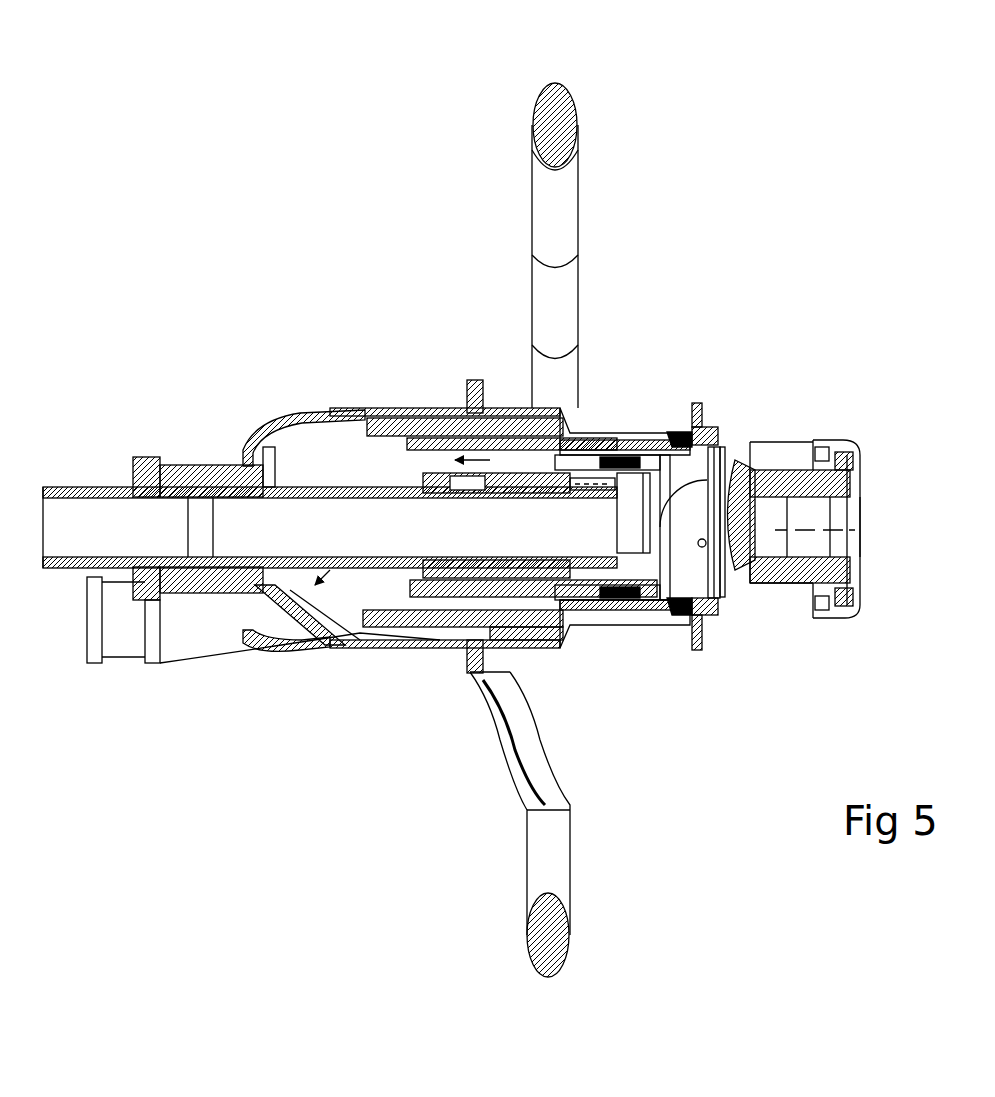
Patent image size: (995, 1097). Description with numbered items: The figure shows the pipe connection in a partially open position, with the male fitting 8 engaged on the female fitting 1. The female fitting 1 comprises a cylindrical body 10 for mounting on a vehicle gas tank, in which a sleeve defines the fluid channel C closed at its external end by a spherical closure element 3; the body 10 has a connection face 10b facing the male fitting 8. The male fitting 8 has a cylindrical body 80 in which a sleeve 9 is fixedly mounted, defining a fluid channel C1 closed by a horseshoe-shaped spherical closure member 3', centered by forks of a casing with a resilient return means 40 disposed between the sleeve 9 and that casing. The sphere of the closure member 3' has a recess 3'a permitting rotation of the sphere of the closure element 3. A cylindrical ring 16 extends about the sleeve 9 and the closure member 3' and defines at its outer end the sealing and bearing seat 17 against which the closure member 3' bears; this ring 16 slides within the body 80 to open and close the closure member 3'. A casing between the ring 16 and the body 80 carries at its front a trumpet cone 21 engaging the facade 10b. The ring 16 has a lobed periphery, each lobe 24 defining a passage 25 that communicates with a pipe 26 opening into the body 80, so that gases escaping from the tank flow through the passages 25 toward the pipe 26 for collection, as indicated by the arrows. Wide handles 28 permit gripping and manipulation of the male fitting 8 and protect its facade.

The female fitting 1 is at (818, 415).
The spherical closure element 3 is at (805, 555).
The spherical closure member 3' is at (721, 477).
The recess 3'a is at (905, 526).
The male fitting 8 is at (405, 365).
The sleeve 9 is at (250, 470).
The cylindrical body 10 is at (838, 440).
The connection face 10b is at (707, 445).
The cylindrical ring 16 is at (680, 600).
The sealing and bearing seat 17 is at (745, 580).
The trumpet cone 21 is at (680, 432).
The lobe 24 is at (608, 600).
The passage 25 is at (607, 452).
The pipe 26 is at (250, 647).
The handles 28 is at (565, 265).
The resilient return means 40 is at (597, 453).
The cylindrical body 80 is at (453, 640).
The fluid channel C is at (790, 548).
The fluid channel C1 is at (345, 520).